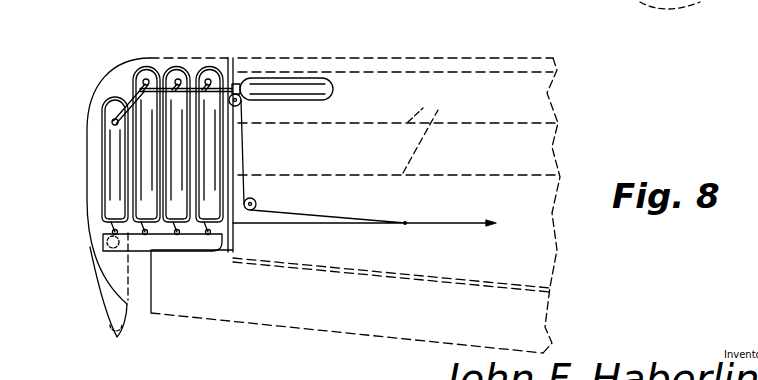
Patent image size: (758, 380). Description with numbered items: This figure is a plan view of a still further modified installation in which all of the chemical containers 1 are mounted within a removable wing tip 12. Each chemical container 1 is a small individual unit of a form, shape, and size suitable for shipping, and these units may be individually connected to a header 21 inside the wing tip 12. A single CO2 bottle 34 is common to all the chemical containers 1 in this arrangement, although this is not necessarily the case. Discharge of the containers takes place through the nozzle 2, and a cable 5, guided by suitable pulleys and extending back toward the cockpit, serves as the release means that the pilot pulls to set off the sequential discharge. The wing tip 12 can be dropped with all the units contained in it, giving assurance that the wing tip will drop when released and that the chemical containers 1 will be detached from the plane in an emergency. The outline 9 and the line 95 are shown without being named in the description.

The removable wing tip 12 is at (97, 113).
The nozzle 2 is at (112, 312).
The chemical container 1 is at (148, 168).
The header 21 is at (163, 240).
The CO2 bottle 34 is at (277, 88).
The cable 5 is at (436, 226).
The body 9 is at (493, 62).
The guide line 95 is at (427, 134).